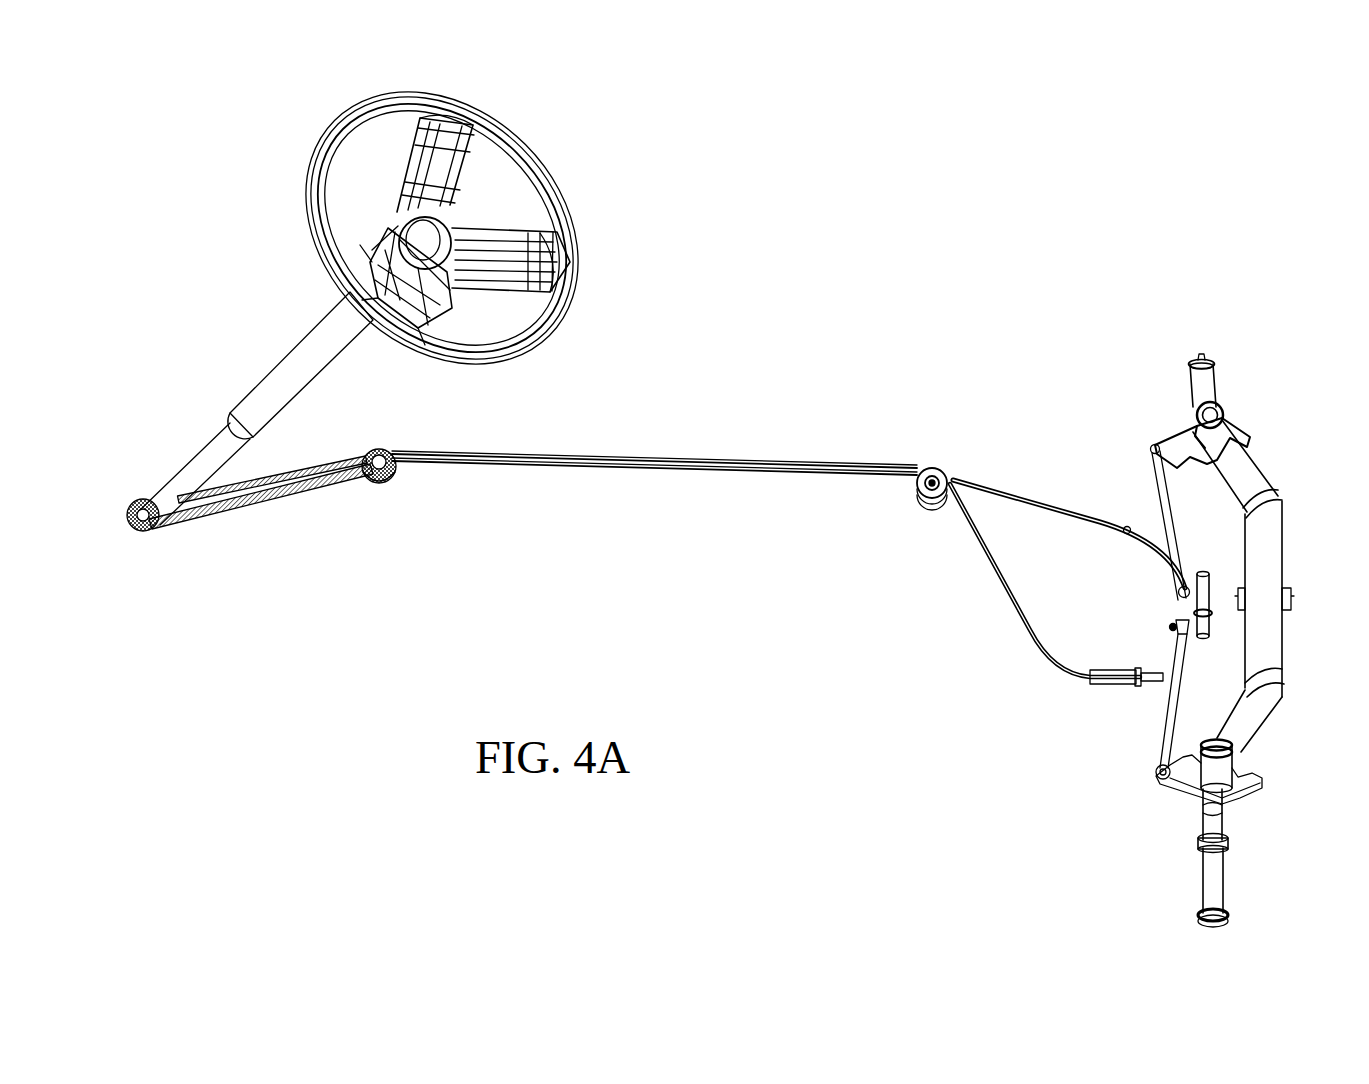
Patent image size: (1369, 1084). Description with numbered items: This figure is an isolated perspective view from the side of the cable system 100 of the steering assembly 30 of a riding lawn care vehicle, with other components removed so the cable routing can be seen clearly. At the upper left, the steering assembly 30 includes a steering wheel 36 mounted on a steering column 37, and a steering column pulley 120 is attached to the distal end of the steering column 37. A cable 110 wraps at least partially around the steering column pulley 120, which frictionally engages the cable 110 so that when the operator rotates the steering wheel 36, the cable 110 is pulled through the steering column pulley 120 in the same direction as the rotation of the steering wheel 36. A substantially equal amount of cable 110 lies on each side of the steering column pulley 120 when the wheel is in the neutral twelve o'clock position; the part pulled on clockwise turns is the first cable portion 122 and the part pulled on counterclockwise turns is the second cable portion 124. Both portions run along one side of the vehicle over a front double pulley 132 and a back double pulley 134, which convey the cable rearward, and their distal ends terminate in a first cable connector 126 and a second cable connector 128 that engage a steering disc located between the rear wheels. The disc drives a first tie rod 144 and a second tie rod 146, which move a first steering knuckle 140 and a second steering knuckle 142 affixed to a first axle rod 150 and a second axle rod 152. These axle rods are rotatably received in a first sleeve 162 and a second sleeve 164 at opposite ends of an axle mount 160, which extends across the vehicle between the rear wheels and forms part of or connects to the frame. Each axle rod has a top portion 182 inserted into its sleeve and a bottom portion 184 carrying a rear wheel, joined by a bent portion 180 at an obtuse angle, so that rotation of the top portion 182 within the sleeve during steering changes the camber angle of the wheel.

The steering assembly 30 is at (435, 228).
The steering wheel 36 is at (435, 228).
The steering column 37 is at (256, 408).
The cable system 100 is at (654, 456).
The cable 110 is at (654, 508).
The steering column pulley 120 is at (108, 481).
The first cable portion 122 is at (669, 519).
The second cable portion 124 is at (659, 556).
The first cable connector 126 is at (1147, 605).
The second cable connector 128 is at (1092, 706).
The front double pulley 132 is at (364, 434).
The back double pulley 134 is at (909, 454).
The first steering knuckle 140 is at (1161, 419).
The second steering knuckle 142 is at (1172, 795).
The first tie rod 144 is at (1128, 525).
The second tie rod 146 is at (1132, 699).
The first axle rod 150 is at (1197, 619).
The second axle rod 152 is at (1192, 834).
The axle mount 160 is at (1268, 586).
The first sleeve 162 is at (1259, 390).
The second sleeve 164 is at (1262, 766).
The bent portion 180 is at (1261, 817).
The top portion 182 is at (1155, 838).
The bottom portion 184 is at (1253, 619).